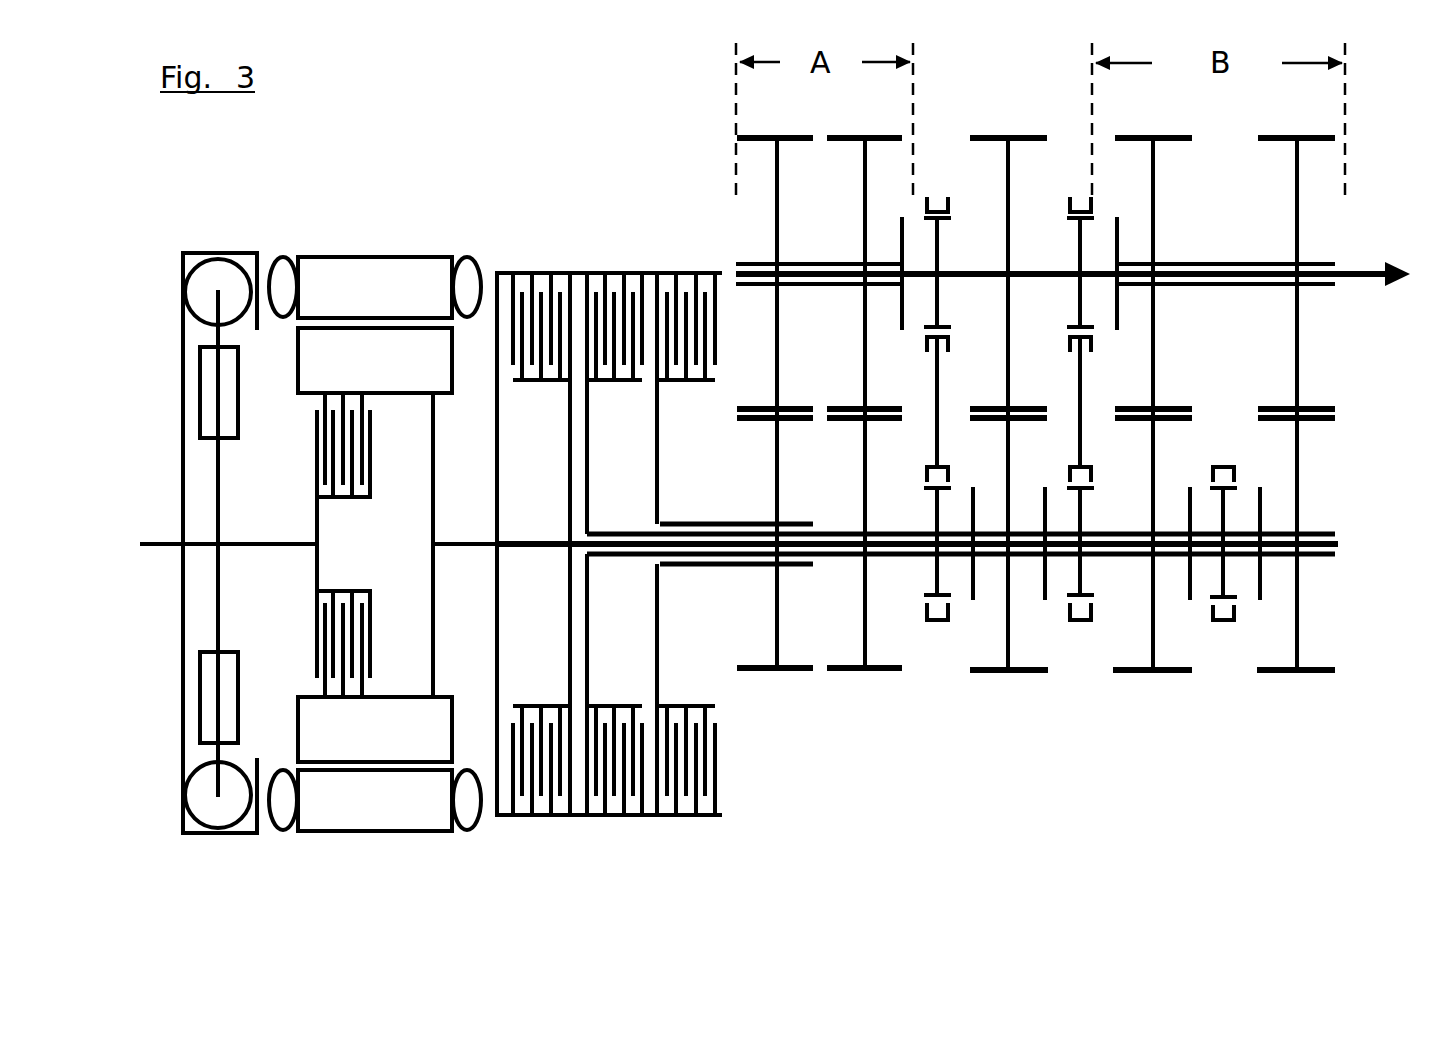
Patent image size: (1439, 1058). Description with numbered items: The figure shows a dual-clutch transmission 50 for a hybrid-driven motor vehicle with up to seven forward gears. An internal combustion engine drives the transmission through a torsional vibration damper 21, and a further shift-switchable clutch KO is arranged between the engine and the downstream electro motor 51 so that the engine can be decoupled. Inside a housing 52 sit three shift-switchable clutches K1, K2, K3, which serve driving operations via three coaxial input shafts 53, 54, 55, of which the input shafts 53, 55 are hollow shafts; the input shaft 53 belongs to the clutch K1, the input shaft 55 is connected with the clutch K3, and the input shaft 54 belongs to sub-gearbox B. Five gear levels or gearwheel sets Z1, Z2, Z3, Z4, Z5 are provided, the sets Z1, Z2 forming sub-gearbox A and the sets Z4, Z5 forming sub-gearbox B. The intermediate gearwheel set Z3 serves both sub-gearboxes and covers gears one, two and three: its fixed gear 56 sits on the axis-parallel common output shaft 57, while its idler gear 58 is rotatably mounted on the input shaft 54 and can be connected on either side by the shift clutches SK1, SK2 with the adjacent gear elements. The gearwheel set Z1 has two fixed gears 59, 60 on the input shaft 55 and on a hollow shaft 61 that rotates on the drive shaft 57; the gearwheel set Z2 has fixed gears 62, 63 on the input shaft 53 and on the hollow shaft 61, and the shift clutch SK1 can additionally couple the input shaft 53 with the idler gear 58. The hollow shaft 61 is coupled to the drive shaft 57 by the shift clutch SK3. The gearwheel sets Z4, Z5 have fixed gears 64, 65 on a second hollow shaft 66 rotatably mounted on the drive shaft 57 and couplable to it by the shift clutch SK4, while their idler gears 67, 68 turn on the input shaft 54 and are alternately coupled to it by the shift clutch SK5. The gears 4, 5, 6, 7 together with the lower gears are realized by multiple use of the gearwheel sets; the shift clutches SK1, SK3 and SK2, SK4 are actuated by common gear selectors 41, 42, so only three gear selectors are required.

The torsional vibration damper 21 is at (193, 833).
The shift-switchable clutch KO is at (288, 665).
The electro motor 51 is at (375, 257).
The housing 52 is at (503, 455).
The input shaft 53 is at (635, 533).
The input shaft 54 is at (1240, 540).
The input shaft 55 is at (723, 526).
The fixed gear 56 is at (1042, 137).
The output shaft 57 is at (1365, 268).
The idler gear 58 is at (1012, 640).
The fixed gear 59 is at (753, 665).
The fixed gear 60 is at (782, 142).
The hollow shaft 61 is at (830, 288).
The fixed gear 62 is at (847, 665).
The fixed gear 63 is at (897, 132).
The fixed gear 64 is at (1157, 143).
The fixed gear 65 is at (1300, 142).
The hollow shaft 66 is at (1248, 288).
The idler gear 67 is at (1168, 668).
The idler gear 68 is at (1298, 665).
The gear selector 41 is at (1079, 421).
The gear selector 42 is at (1152, 371).
The dual-clutch transmission 50 is at (992, 766).
The shift-switchable clutch K1 is at (612, 268).
The shift-switchable clutch K2 is at (540, 268).
The shift-switchable clutch K3 is at (692, 268).
The gearwheel set Z1 is at (775, 119).
The gearwheel set Z2 is at (864, 119).
The intermediate gearwheel set Z3 is at (1008, 119).
The gearwheel set Z4 is at (1153, 119).
The gearwheel set Z5 is at (1296, 119).
The shift clutch SK1 is at (937, 640).
The shift clutch SK2 is at (1079, 643).
The shift clutch SK3 is at (967, 177).
The shift clutch SK4 is at (1078, 193).
The shift clutch SK5 is at (1228, 643).
The gear 4 is at (1296, 693).
The gear 5 is at (864, 692).
The gear 6 is at (775, 692).
The gear 7 is at (1152, 693).